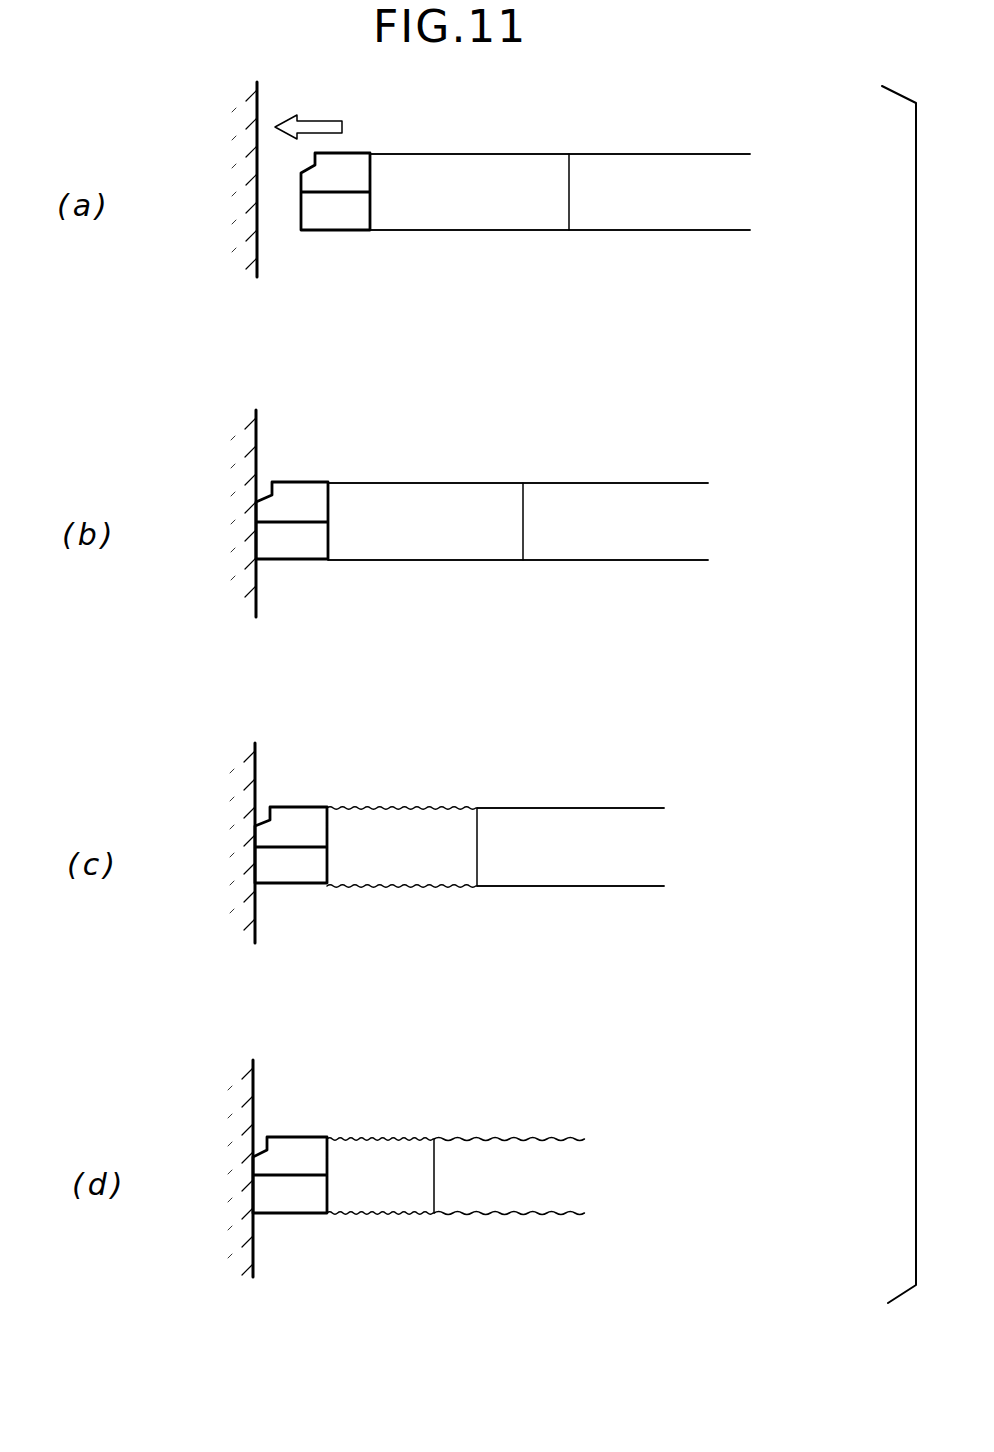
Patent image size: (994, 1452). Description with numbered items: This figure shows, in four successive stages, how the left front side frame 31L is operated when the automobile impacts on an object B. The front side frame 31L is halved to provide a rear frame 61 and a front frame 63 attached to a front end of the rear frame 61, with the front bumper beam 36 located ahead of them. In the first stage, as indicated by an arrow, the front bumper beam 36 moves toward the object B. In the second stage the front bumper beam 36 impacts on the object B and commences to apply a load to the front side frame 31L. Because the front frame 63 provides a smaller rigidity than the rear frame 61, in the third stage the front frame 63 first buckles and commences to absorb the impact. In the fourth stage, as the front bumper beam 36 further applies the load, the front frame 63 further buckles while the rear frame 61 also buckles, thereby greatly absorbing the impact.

The object B is at (249, 243).
The front bumper beam 36 is at (349, 231).
The front frame 63 is at (525, 232).
The rear frame 61 is at (620, 233).
The left front side frame 31L is at (726, 245).